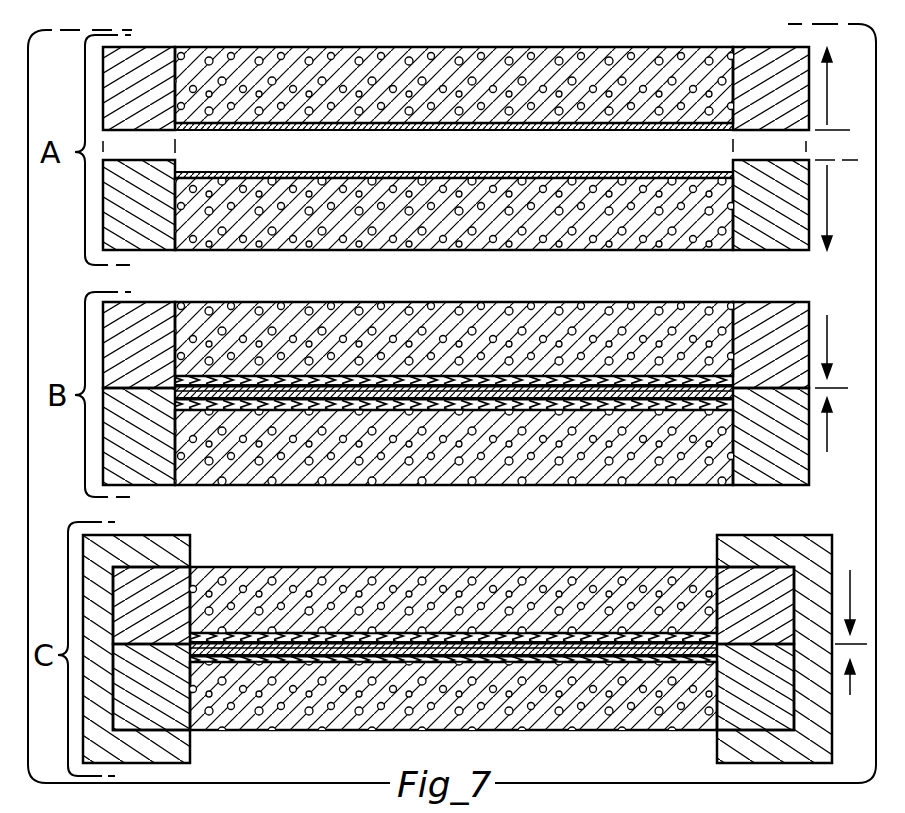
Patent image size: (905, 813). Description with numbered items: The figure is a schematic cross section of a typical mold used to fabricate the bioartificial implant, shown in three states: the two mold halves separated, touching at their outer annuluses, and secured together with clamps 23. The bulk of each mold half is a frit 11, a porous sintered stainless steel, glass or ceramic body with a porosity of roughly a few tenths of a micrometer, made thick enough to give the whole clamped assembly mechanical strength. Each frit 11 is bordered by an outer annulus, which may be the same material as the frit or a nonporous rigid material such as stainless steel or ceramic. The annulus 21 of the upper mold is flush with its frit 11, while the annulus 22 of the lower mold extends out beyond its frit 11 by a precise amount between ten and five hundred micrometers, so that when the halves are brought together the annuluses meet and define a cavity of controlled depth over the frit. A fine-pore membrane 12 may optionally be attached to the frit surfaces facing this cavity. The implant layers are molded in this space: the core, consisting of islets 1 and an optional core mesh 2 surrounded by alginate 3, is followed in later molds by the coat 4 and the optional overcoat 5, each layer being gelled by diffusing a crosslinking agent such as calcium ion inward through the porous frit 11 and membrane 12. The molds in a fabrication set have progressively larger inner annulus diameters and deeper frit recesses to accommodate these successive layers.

The islets 1 is at (454, 392).
The core mesh 2 is at (454, 392).
The alginate 3 is at (454, 392).
The coat 4 is at (454, 392).
The overcoat 5 is at (605, 378).
The frit 11 is at (430, 195).
The membrane 12 is at (533, 178).
The annulus of the upper mold 21 is at (135, 62).
The annulus of the lower mold 22 is at (148, 240).
The outer mold frame 23 is at (165, 543).